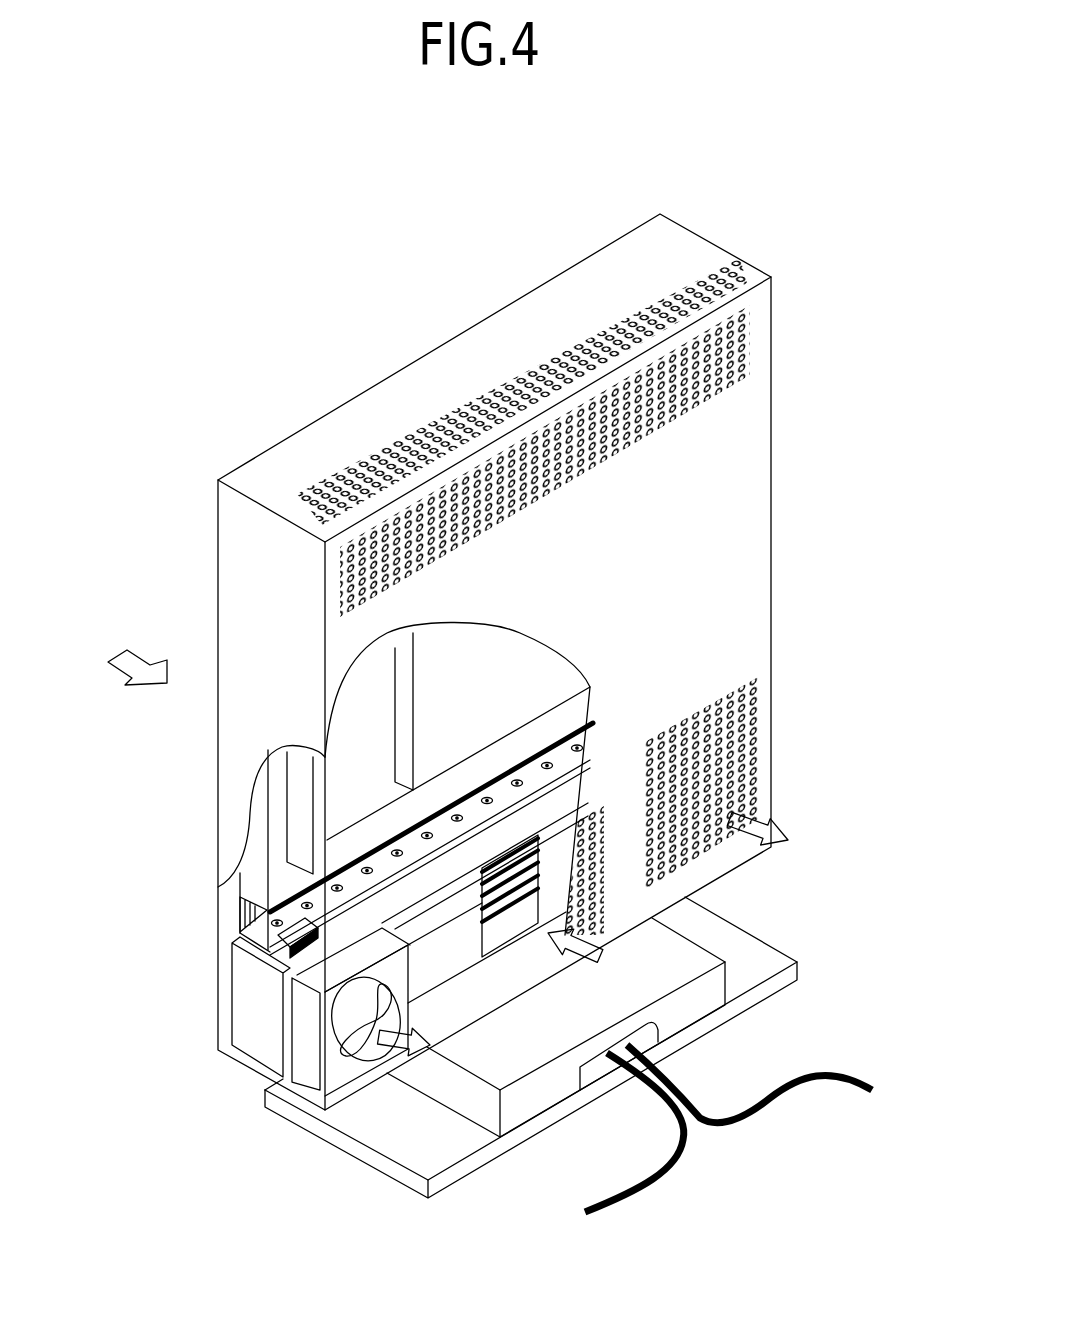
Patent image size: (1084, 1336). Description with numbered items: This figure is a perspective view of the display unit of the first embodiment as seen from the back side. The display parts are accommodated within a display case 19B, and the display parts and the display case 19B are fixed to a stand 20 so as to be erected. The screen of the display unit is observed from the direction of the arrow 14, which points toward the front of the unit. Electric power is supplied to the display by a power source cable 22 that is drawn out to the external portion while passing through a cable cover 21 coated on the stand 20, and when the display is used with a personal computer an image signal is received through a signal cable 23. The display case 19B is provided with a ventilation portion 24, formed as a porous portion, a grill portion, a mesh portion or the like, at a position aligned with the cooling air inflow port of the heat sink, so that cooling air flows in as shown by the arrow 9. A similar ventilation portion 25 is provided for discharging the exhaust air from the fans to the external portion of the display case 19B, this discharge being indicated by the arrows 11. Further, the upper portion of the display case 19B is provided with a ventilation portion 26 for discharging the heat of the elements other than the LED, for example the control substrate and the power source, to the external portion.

The arrow 9 is at (602, 960).
The arrow 11 is at (777, 846).
The arrow 14 is at (123, 660).
The display case 19B is at (737, 537).
The stand 20 is at (793, 967).
The cable cover 21 is at (532, 1100).
The power source cable 22 is at (773, 1107).
The signal cable 23 is at (653, 1182).
The ventilation portion 24 is at (597, 807).
The ventilation portion 25 is at (757, 760).
The ventilation portion 26 is at (713, 288).